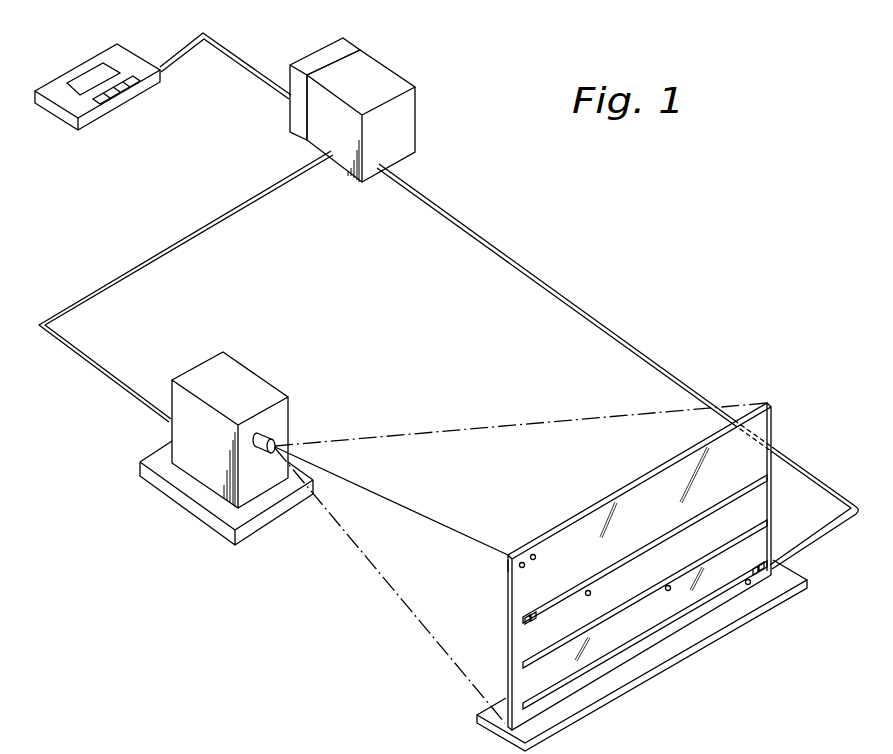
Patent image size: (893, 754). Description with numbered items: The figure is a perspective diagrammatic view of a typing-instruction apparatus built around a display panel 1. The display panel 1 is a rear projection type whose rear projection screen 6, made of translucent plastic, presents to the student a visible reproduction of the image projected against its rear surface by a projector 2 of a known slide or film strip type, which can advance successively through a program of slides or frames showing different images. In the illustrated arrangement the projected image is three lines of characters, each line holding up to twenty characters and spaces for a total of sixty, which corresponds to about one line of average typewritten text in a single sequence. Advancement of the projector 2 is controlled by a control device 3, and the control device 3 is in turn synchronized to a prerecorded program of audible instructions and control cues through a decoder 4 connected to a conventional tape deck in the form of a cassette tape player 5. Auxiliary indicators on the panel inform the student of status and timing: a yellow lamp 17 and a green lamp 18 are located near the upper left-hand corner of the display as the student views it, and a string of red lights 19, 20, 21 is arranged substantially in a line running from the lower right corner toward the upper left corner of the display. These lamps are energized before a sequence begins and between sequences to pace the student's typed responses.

The display panel 1 is at (780, 401).
The projector 2 is at (255, 380).
The control device 3 is at (378, 76).
The decoder 4 is at (312, 53).
The cassette tape player 5 is at (83, 68).
The rear projection screen 6 is at (772, 438).
The yellow lamp 17 is at (511, 565).
The green lamp 18 is at (533, 554).
The red light 19 is at (748, 585).
The red light 20 is at (668, 591).
The red light 21 is at (588, 590).